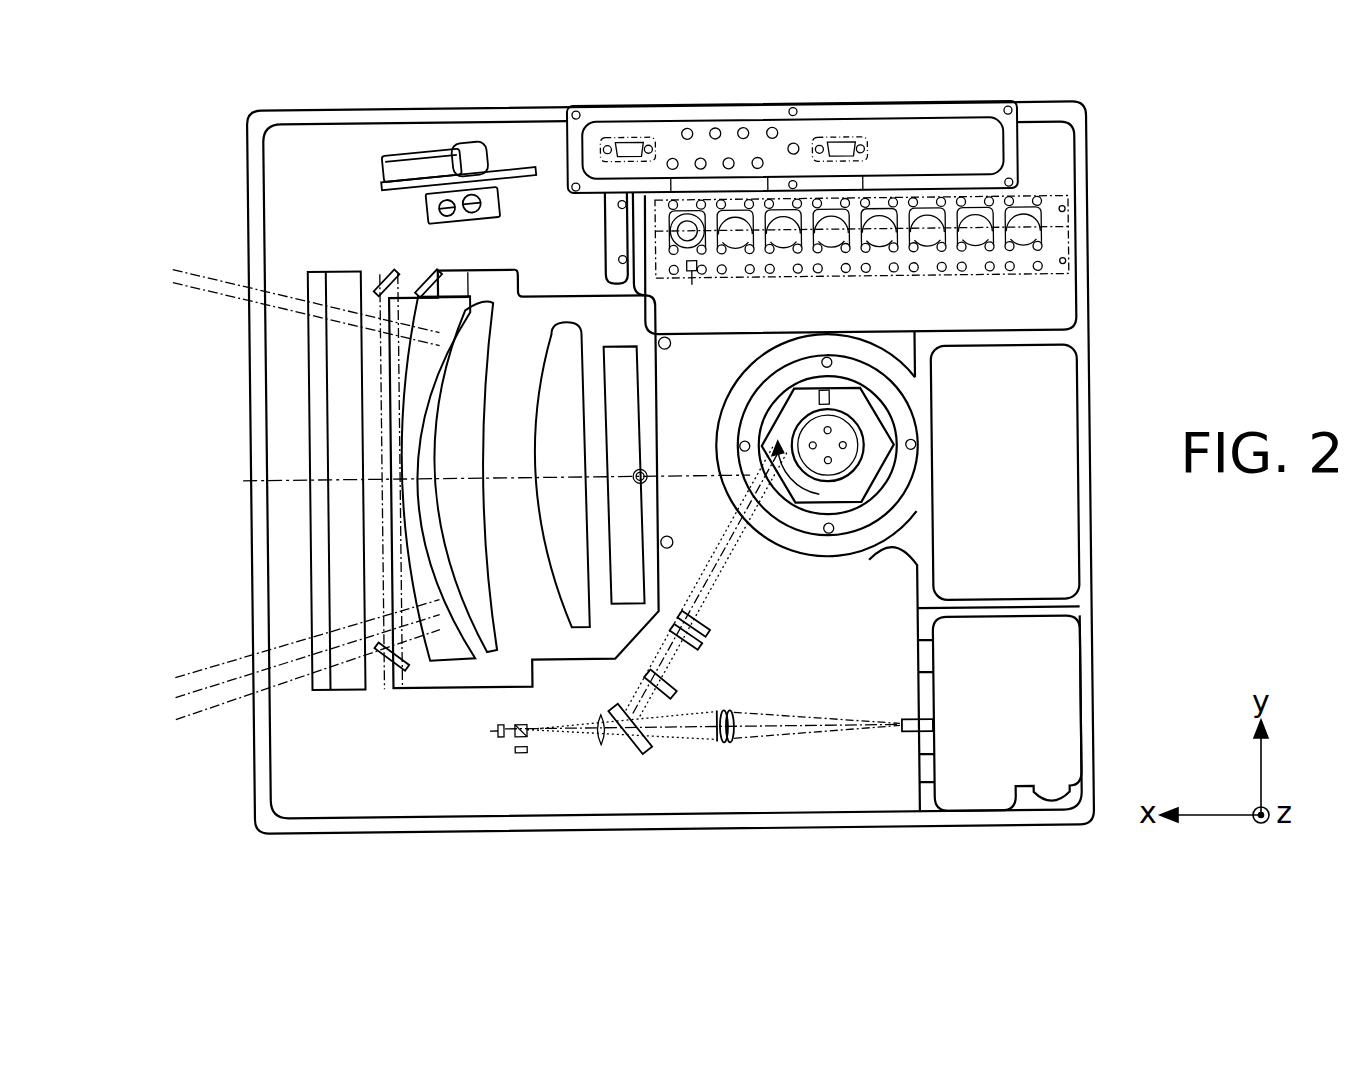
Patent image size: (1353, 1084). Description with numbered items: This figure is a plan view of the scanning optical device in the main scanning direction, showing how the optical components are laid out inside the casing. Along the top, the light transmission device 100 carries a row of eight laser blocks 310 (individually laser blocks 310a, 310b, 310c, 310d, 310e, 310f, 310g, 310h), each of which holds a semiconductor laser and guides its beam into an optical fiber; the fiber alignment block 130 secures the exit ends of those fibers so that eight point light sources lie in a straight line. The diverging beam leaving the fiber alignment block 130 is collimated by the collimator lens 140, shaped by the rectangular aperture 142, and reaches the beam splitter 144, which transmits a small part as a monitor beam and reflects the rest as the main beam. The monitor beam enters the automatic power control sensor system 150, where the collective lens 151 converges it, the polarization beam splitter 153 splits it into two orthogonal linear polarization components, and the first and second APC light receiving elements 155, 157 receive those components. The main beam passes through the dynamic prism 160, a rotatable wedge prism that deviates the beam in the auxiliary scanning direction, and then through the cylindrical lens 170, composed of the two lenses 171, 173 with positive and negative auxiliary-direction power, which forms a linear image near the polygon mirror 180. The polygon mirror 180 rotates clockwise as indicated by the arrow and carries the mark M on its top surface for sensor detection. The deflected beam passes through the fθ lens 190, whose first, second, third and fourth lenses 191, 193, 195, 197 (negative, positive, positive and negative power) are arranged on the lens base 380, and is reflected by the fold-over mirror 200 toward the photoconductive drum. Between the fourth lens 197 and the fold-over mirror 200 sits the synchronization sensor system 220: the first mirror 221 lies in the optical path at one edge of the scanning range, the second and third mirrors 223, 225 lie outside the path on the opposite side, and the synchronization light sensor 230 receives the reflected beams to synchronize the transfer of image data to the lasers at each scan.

The light transmission device 100 is at (1131, 247).
The fiber alignment block 130 is at (932, 726).
The collimator lens 140 is at (725, 742).
The aperture 142 is at (709, 747).
The beam splitter 144 is at (635, 748).
The automatic power control (APC) sensor system 150 is at (517, 793).
The collective lens 151 is at (599, 758).
The polarization beam splitter 153 is at (513, 750).
The first APC light receiving element 155 is at (494, 733).
The second APC light receiving element 157 is at (520, 736).
The dynamic prism 160 is at (674, 690).
The cylindrical lens 170 is at (758, 623).
The lens 171 is at (698, 644).
The lens 173 is at (703, 626).
The polygon mirror 180 is at (851, 444).
The fθ lens 190 is at (522, 427).
The first lens 191 is at (602, 418).
The second lens 193 is at (564, 322).
The third lens 195 is at (487, 303).
The fourth lens 197 is at (445, 300).
The fold-over mirror 200 is at (340, 686).
The synchronization sensor system 220 is at (330, 405).
The first mirror 221 is at (302, 612).
The second mirror 223 is at (387, 293).
The third mirror 225 is at (422, 293).
The synchronization light sensor 230 is at (402, 208).
The laser block 310 is at (905, 249).
The laser block 310a is at (702, 238).
The laser block 310b is at (738, 252).
The laser block 310c is at (786, 238).
The laser block 310d is at (836, 252).
The laser block 310e is at (882, 238).
The laser block 310f is at (932, 252).
The laser block 310g is at (972, 238).
The laser block 310h is at (1024, 252).
The lens base 380 is at (660, 420).
The mark M is at (829, 394).